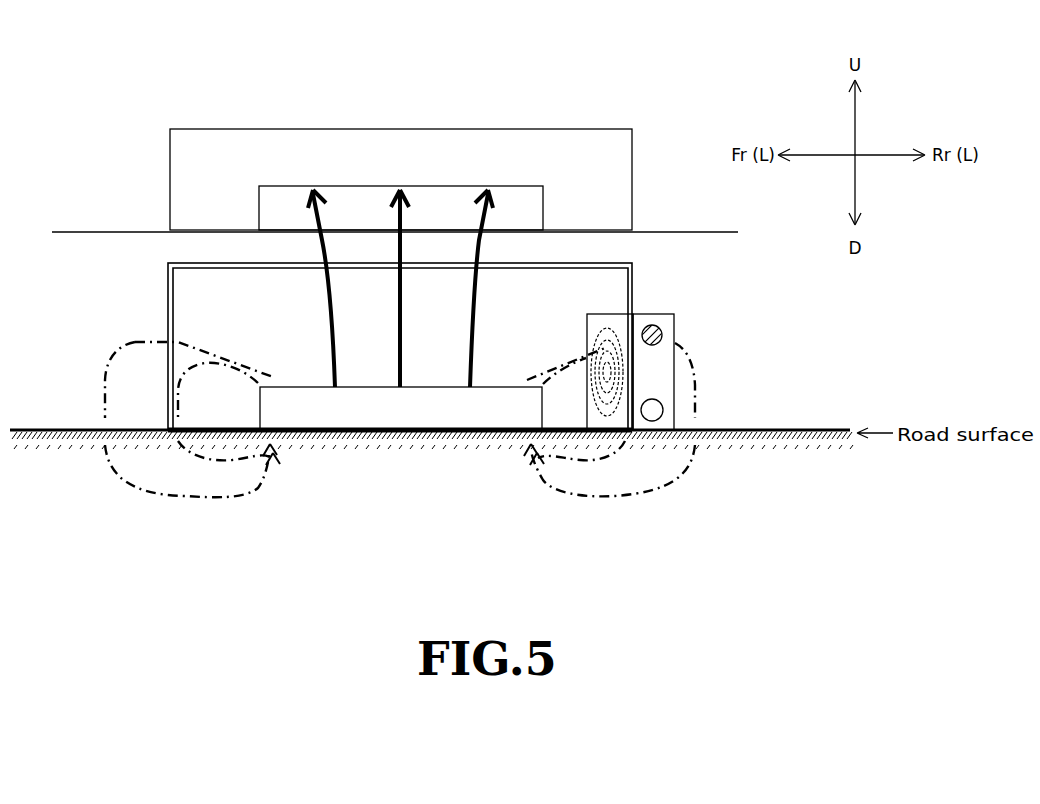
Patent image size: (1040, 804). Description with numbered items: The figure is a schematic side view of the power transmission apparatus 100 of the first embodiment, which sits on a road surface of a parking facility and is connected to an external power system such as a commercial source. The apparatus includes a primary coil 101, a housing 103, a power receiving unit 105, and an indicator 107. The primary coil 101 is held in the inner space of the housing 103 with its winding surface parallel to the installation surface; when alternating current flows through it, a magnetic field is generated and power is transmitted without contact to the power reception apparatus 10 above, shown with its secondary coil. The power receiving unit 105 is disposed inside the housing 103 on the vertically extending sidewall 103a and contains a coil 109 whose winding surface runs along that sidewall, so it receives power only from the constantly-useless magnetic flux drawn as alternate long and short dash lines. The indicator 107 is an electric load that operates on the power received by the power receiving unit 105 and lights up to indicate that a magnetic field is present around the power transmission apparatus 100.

The power reception apparatus 10 is at (622, 114).
The power transmission apparatus 100 is at (157, 284).
The primary coil 101 is at (296, 385).
The housing 103 is at (634, 284).
The sidewall 103a is at (631, 299).
The power receiving unit 105 is at (586, 335).
The indicator 107 is at (675, 337).
The coil 109 is at (596, 497).